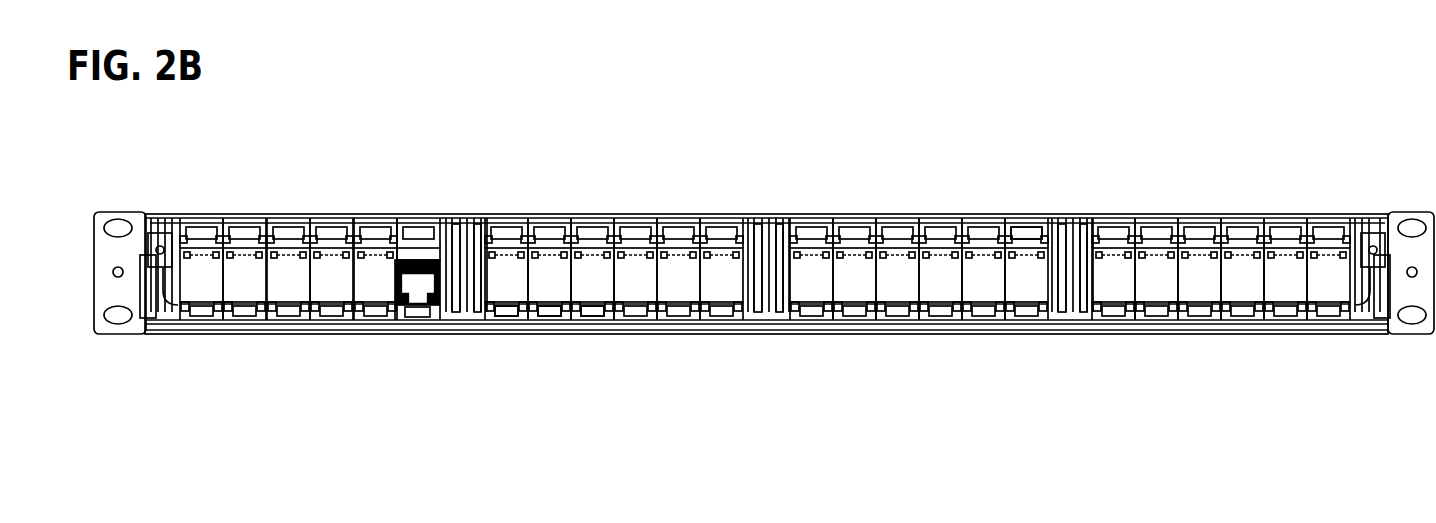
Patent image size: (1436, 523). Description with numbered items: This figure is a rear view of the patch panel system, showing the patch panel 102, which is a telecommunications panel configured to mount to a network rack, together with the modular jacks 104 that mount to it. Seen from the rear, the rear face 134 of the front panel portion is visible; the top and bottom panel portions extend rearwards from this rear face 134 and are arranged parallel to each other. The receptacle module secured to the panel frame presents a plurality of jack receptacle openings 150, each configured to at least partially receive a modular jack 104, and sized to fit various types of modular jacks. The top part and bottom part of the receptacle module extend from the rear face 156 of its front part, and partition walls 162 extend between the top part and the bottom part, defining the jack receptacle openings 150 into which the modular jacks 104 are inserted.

The patch panel 102 is at (332, 132).
The modular jack 104 is at (430, 305).
The rear face 134 is at (1075, 215).
The jack receptacle opening 150 is at (505, 280).
The rear face 156 is at (1038, 240).
The partition wall 162 is at (522, 295).